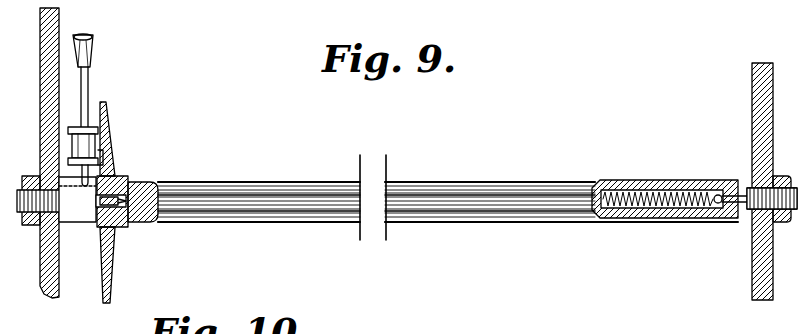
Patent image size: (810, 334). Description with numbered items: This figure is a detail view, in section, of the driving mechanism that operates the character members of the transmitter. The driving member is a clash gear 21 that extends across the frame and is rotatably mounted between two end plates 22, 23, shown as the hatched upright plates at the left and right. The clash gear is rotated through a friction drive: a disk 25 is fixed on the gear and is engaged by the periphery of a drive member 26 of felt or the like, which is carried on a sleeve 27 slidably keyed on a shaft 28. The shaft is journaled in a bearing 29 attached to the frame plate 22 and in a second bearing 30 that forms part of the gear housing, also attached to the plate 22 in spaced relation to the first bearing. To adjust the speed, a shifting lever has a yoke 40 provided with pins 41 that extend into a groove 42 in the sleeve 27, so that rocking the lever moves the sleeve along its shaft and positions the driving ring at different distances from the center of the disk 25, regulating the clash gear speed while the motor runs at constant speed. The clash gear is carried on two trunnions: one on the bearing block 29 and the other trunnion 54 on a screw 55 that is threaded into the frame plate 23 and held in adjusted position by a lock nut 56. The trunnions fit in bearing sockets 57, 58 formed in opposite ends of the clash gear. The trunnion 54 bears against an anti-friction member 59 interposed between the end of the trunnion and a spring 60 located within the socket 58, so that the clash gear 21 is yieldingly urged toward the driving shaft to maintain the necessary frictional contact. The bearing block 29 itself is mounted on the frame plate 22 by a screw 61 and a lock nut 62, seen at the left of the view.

The clash gear 21 is at (227, 211).
The end plate 22 is at (60, 33).
The end plate 23 is at (762, 260).
The disk 25 is at (110, 265).
The drive member 26 is at (113, 158).
The sleeve 27 is at (110, 150).
The shaft 28 is at (90, 72).
The bearing 29 is at (127, 177).
The bearing 30 is at (96, 43).
The yoke 40 is at (110, 117).
The pins 41 is at (111, 135).
The groove 42 is at (70, 128).
The trunnion 54 is at (745, 210).
The screw 55 is at (753, 177).
The lock nut 56 is at (752, 145).
The bearing socket 57 is at (132, 223).
The bearing socket 58 is at (727, 180).
The anti-friction member 59 is at (708, 219).
The spring 60 is at (668, 190).
The screw 61 is at (61, 228).
The lock nut 62 is at (33, 226).